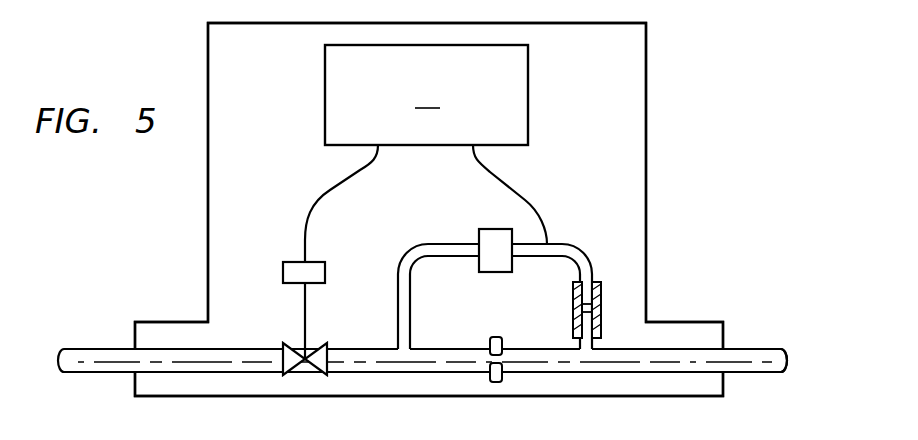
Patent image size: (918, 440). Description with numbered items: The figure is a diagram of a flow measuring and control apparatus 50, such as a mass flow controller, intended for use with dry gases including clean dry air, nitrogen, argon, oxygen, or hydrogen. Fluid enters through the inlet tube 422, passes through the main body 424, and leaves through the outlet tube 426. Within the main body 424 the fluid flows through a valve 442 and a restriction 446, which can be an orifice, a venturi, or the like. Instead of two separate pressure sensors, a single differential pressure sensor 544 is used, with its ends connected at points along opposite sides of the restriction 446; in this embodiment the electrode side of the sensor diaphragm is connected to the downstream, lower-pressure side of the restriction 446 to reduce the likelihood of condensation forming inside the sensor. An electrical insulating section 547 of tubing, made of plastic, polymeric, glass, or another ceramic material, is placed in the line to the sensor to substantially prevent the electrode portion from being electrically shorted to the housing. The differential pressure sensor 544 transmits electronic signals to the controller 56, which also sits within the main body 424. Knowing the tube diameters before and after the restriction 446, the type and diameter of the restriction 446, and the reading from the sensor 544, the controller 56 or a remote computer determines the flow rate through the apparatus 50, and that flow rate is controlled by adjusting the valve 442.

The flow measuring and control apparatus 50 is at (685, 54).
The controller 56 is at (426, 153).
The inlet tube 422 is at (94, 349).
The main body 424 is at (656, 132).
The outlet tube 426 is at (748, 348).
The valve 442 is at (295, 300).
The restriction 446 is at (488, 342).
The differential pressure sensor 544 is at (478, 236).
The electrical insulating section 547 is at (600, 298).